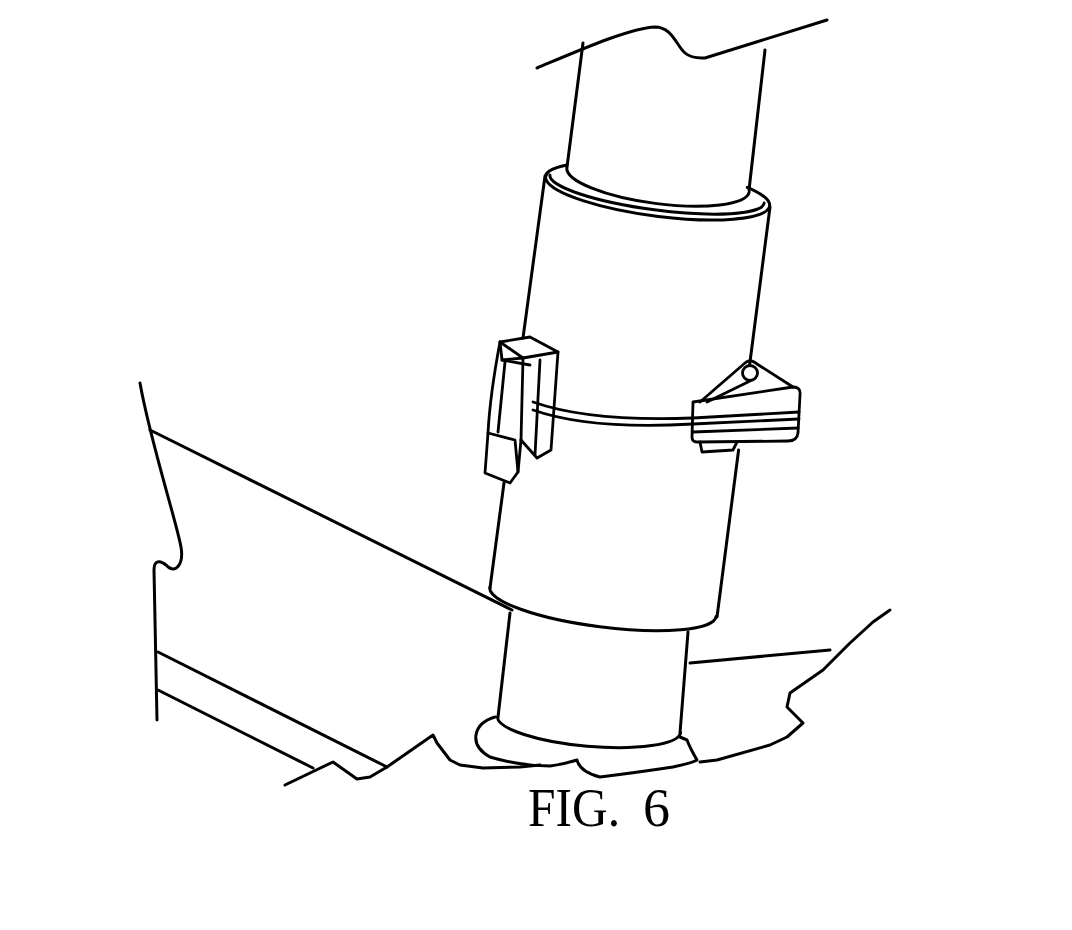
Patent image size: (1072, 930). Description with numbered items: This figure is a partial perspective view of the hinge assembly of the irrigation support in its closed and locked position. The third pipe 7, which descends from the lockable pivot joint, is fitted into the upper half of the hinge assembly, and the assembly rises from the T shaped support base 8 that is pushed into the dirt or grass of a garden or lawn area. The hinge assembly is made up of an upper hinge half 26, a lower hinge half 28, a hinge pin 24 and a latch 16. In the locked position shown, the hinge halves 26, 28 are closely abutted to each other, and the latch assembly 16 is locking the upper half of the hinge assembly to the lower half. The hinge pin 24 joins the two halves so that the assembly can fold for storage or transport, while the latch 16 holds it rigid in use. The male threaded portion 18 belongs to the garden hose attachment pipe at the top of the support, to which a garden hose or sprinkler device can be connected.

The third pipe 7 is at (805, 72).
The T shaped support base 8 is at (291, 537).
The latch 16 is at (485, 332).
The male threaded portion 18 is at (798, 412).
The hinge pin 24 is at (800, 412).
The upper hinge half 26 is at (811, 355).
The lower hinge half 28 is at (785, 410).